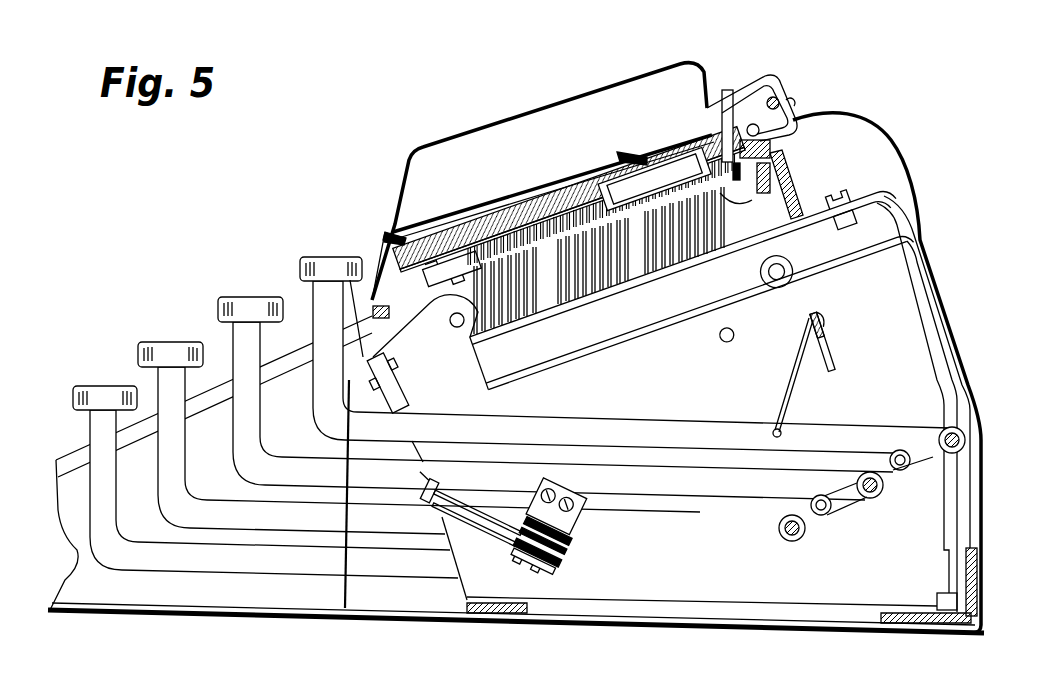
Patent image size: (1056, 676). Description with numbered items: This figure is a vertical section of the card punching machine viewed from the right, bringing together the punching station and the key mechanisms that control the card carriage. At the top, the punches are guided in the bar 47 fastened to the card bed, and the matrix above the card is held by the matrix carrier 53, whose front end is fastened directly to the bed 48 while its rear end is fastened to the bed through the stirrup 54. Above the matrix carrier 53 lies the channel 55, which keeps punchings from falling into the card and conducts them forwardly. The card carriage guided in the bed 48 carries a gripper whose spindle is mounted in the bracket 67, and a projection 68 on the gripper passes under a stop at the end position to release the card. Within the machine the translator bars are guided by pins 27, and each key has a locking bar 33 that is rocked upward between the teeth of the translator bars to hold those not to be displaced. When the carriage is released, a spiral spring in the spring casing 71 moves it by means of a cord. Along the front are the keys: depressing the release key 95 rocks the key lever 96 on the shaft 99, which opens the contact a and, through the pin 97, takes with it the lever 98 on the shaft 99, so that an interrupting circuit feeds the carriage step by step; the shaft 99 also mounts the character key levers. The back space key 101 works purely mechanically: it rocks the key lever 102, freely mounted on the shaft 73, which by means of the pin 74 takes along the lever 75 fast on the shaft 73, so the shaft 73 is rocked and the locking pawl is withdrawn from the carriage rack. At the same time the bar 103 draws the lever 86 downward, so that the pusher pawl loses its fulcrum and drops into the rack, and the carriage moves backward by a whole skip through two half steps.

The pins 27 is at (569, 302).
The locking bar 33 is at (700, 302).
The bar 47 is at (560, 227).
The bed 48 is at (378, 240).
The matrix carrier 53 is at (422, 215).
The stirrup 54 is at (784, 82).
The channel 55 is at (484, 155).
The bracket 67 is at (748, 123).
The projection 68 is at (780, 100).
The spring casing 71 is at (674, 188).
The shaft 73 is at (966, 438).
The pin 74 is at (907, 468).
The lever 75 is at (911, 459).
The lever 86 is at (828, 335).
The release key 95 is at (257, 313).
The key lever 96 is at (243, 335).
The pin 97 is at (821, 515).
The lever 98 is at (842, 512).
The shaft 99 is at (882, 490).
The back space key 101 is at (331, 256).
The key lever 102 is at (323, 335).
The bar 103 is at (791, 398).
The contact a is at (452, 517).